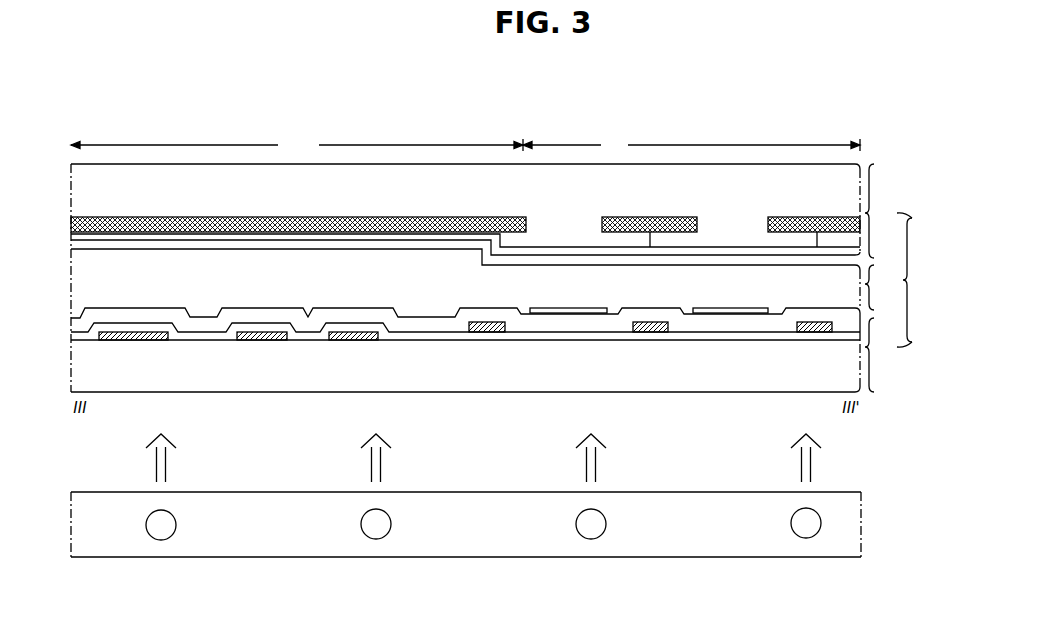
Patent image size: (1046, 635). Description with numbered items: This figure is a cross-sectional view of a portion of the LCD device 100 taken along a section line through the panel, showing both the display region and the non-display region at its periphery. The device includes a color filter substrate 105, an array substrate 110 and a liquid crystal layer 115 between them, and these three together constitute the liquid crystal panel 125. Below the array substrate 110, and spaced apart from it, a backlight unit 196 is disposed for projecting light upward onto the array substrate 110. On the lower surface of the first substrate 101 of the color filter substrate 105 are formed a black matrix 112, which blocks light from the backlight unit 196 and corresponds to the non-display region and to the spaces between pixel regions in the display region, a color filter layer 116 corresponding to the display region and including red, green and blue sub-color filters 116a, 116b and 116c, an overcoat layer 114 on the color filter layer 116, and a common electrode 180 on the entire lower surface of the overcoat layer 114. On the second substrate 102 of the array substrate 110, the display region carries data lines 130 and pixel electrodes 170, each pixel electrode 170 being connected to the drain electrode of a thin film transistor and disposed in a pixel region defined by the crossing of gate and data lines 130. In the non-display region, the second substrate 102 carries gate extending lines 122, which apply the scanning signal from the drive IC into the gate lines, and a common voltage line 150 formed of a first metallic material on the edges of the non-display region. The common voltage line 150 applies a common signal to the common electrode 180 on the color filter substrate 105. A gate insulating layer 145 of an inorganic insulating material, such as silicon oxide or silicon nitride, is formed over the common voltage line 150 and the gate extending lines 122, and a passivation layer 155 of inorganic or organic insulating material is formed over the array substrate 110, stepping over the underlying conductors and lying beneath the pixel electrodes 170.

The LCD device 100 is at (834, 98).
The first substrate 101 is at (465, 208).
The second substrate 102 is at (465, 366).
The color filter substrate 105 is at (881, 211).
The array substrate 110 is at (484, 355).
The black matrix 112 is at (303, 233).
The overcoat layer 114 is at (207, 241).
The liquid crystal layer 115 is at (878, 287).
The color filter layer 116 is at (713, 80).
The sub-color filter 116a is at (586, 226).
The sub-color filter 116b is at (730, 213).
The sub-color filter 116c is at (832, 235).
The gate extending line 122 is at (258, 333).
The liquid crystal panel 125 is at (916, 280).
The data line 130 is at (480, 322).
The gate insulating layer 145 is at (410, 334).
The common voltage line 150 is at (128, 333).
The passivation layer 155 is at (442, 322).
The pixel electrode 170 is at (560, 310).
The common electrode 180 is at (615, 266).
The backlight unit 196 is at (853, 523).